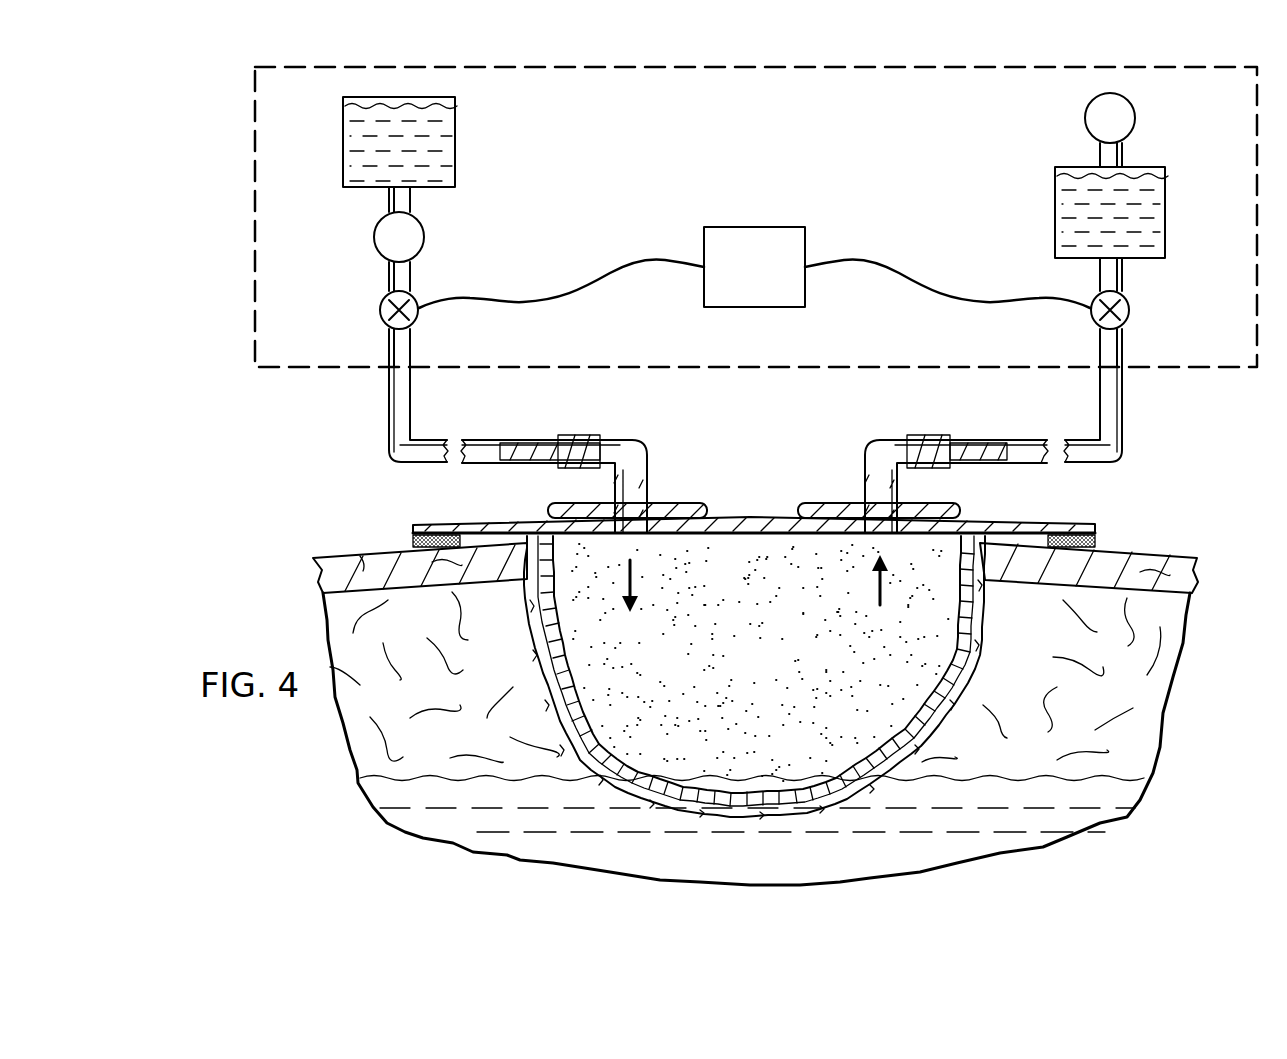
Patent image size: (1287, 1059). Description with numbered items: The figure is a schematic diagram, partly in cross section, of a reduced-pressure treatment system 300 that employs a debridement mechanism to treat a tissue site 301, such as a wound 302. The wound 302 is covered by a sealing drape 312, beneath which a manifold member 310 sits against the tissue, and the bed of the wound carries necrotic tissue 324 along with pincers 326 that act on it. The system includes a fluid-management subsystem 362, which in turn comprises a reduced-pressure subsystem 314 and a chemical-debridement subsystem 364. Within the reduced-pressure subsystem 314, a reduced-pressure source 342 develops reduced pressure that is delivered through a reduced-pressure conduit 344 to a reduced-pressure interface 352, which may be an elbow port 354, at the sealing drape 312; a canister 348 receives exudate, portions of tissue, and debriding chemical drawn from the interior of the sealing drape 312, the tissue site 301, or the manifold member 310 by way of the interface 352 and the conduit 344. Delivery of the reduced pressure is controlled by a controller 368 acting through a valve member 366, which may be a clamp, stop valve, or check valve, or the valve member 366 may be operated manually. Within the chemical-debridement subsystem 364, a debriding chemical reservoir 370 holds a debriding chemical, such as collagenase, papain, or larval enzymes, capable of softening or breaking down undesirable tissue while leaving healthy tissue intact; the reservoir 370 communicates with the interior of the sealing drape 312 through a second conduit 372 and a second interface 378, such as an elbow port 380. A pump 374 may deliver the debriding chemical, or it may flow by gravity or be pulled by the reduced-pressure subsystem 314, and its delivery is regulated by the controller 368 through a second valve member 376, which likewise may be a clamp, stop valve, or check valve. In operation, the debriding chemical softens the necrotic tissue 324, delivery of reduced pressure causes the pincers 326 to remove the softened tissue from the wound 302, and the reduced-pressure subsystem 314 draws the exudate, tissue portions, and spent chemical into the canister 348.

The reduced-pressure treatment system 300 is at (212, 113).
The tissue site 301 is at (947, 735).
The wound 302 is at (979, 660).
The manifold member 310 is at (773, 671).
The sealing drape 312 is at (738, 517).
The reduced-pressure subsystem 314 is at (1183, 122).
The necrotic tissue 324 is at (986, 618).
The pincers 326 is at (543, 663).
The reduced-pressure source 342 is at (1086, 115).
The reduced-pressure conduit 344 is at (1122, 432).
The canister 348 is at (1055, 198).
The reduced-pressure interface 352 is at (869, 439).
The elbow port 354 is at (915, 440).
The fluid-management subsystem 362 is at (251, 193).
The chemical-debridement subsystem 364 is at (327, 124).
The valve member 366 is at (1129, 313).
The controller 368 is at (768, 227).
The debriding chemical reservoir 370 is at (455, 128).
The second conduit 372 is at (389, 432).
The pump 374 is at (375, 240).
The second valve member 376 is at (381, 314).
The second interface 378 is at (643, 439).
The elbow port 380 is at (603, 441).